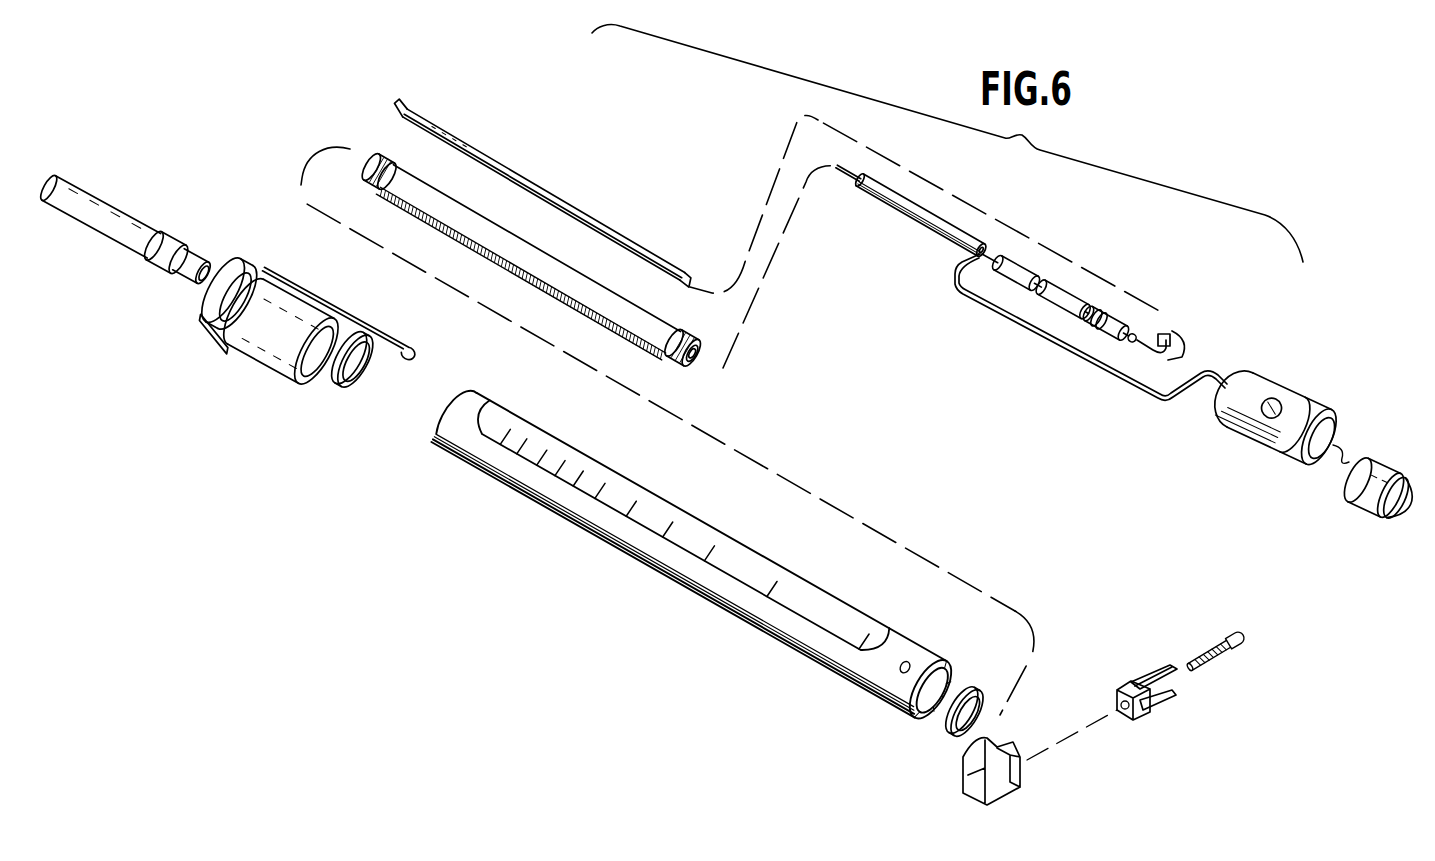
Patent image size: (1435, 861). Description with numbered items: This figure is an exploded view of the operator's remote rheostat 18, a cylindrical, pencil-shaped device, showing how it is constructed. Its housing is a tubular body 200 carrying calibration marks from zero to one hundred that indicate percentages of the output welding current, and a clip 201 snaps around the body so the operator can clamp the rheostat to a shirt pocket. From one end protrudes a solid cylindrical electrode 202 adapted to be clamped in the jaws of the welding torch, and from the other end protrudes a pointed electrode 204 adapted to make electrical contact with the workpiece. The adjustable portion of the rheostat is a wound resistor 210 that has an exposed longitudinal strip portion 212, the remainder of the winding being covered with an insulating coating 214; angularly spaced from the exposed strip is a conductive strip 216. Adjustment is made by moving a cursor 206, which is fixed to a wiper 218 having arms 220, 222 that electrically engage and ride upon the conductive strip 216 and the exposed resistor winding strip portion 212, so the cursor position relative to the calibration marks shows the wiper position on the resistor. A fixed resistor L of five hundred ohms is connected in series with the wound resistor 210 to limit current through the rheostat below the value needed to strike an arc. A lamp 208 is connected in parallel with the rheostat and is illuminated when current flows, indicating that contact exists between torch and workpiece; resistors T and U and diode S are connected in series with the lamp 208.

The operator's remote rheostat 18 is at (292, 63).
The tubular body 200 is at (567, 503).
The clip 201 is at (303, 275).
The solid cylindrical electrode 202 is at (137, 213).
The pointed electrode 204 is at (1400, 508).
The cursor 206 is at (967, 765).
The lamp 208 is at (1166, 332).
The wound resistor 210 is at (559, 310).
The exposed longitudinal strip portion 212 is at (490, 257).
The insulating coating 214 is at (612, 297).
The conductive strip 216 is at (605, 228).
The wiper 218 is at (1133, 722).
The wiper arm 220 is at (1150, 667).
The wiper arm 222 is at (1167, 688).
The fixed resistor L is at (920, 223).
The resistor T is at (1034, 270).
The resistor U is at (1082, 296).
The diode S is at (1108, 318).